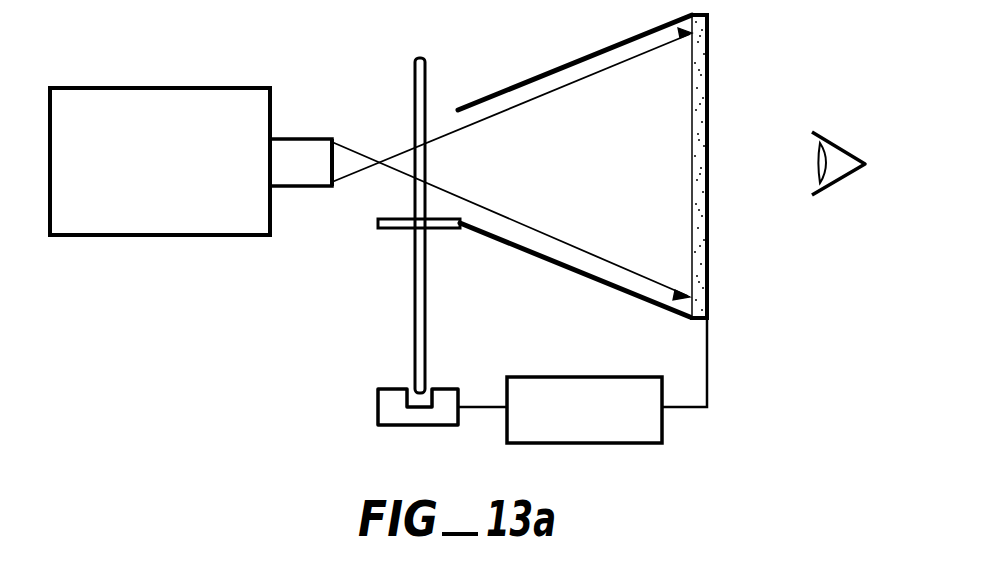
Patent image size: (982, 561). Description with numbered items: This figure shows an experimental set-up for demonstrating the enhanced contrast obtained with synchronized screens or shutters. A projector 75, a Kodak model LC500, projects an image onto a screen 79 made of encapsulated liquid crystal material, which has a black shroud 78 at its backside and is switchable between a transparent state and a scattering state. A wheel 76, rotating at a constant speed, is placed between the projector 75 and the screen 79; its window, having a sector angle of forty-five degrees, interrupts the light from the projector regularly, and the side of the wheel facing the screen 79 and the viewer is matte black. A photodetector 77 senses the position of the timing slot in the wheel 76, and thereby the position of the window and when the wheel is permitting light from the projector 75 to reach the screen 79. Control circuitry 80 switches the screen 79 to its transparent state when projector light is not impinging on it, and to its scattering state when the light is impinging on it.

The projector 75 is at (210, 237).
The wheel 76 is at (414, 79).
The photodetector 77 is at (378, 410).
The black shroud 78 is at (536, 79).
The screen 79 is at (708, 273).
The control circuitry 80 is at (553, 377).